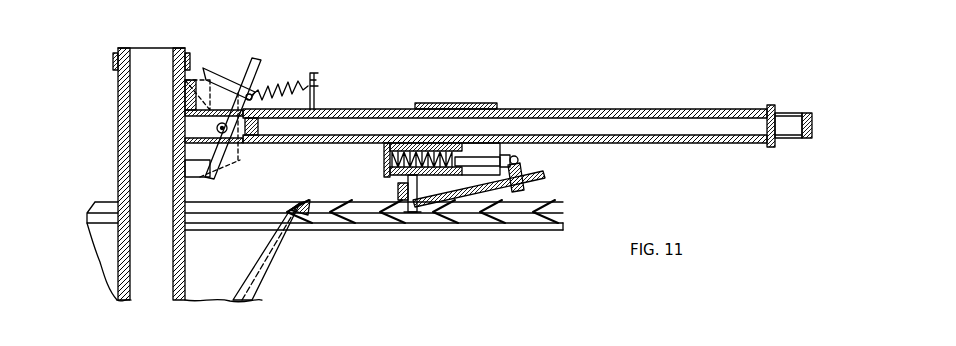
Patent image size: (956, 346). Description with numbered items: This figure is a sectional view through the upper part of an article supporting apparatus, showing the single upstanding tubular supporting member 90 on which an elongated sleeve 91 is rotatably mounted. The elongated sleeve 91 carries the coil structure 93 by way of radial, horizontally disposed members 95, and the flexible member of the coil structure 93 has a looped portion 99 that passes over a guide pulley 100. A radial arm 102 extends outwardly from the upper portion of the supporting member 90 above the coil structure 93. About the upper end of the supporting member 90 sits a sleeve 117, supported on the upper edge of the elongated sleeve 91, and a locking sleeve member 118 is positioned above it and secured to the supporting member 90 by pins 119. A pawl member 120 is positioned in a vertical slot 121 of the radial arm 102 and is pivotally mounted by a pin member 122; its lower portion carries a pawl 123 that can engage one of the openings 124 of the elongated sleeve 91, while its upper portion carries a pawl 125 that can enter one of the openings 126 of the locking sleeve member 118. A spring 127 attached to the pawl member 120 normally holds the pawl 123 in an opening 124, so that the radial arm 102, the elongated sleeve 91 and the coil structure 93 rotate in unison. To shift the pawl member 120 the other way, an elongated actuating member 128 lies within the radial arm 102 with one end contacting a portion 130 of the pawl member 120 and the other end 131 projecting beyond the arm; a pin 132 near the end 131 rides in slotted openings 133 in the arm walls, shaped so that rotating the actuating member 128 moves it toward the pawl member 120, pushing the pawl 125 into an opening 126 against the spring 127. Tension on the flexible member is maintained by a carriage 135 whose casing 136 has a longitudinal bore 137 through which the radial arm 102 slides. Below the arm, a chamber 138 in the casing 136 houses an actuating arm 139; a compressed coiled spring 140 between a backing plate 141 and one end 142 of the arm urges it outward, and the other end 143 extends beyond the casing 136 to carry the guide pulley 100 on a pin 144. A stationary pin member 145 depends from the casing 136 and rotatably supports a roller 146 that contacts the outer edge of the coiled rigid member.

The supporting member 90 is at (130, 296).
The elongated sleeve 91 is at (118, 283).
The coil structure 93 is at (505, 205).
The radial horizontally disposed members 95 is at (278, 271).
The looped portion 99 is at (470, 201).
The guide pulley 100 is at (540, 180).
The radial arm 102 is at (598, 108).
The sleeve 117 is at (118, 130).
The locking sleeve member 118 is at (118, 77).
The pins 119 is at (115, 62).
The pawl member 120 is at (237, 155).
The vertical slot 121 is at (240, 142).
The pin member 122 is at (248, 68).
The pawl 123 is at (200, 178).
The openings 124 is at (190, 174).
The pawl 125 is at (206, 68).
The openings 126 is at (192, 75).
The spring 127 is at (284, 78).
The elongated actuating member 128 is at (357, 143).
The portion of the pawl member 130 is at (262, 118).
The end of the actuating member 131 is at (812, 113).
The pin 132 is at (772, 147).
The slotted openings 133 is at (768, 105).
The carriage 135 is at (483, 96).
The casing 136 is at (428, 103).
The longitudinal bore 137 is at (497, 107).
The chamber 138 is at (500, 180).
The actuating arm 139 is at (520, 163).
The coiled spring 140 is at (433, 170).
The backing plate 141 is at (384, 165).
The end of the arm 142 is at (458, 168).
The other end of the arm 143 is at (525, 164).
The pin 144 is at (528, 192).
The stationary pin member 145 is at (410, 213).
The roller 146 is at (418, 213).